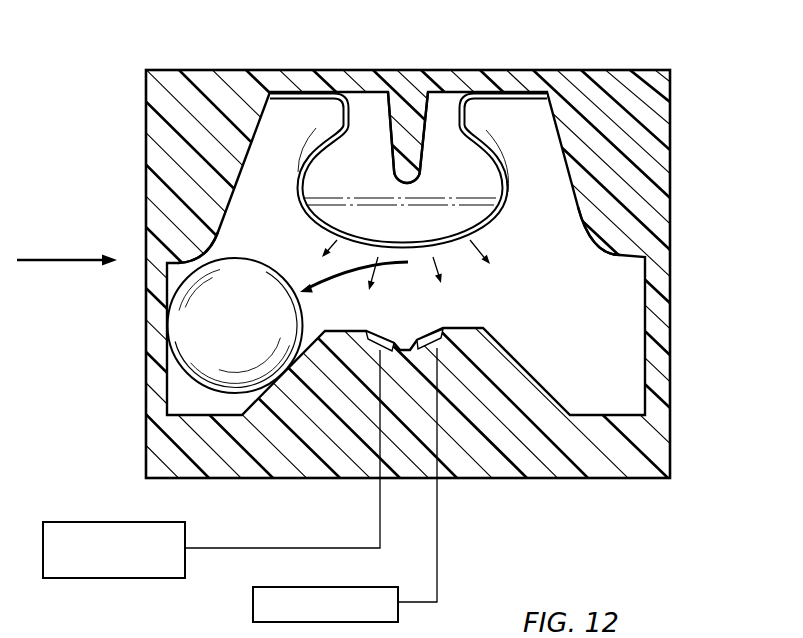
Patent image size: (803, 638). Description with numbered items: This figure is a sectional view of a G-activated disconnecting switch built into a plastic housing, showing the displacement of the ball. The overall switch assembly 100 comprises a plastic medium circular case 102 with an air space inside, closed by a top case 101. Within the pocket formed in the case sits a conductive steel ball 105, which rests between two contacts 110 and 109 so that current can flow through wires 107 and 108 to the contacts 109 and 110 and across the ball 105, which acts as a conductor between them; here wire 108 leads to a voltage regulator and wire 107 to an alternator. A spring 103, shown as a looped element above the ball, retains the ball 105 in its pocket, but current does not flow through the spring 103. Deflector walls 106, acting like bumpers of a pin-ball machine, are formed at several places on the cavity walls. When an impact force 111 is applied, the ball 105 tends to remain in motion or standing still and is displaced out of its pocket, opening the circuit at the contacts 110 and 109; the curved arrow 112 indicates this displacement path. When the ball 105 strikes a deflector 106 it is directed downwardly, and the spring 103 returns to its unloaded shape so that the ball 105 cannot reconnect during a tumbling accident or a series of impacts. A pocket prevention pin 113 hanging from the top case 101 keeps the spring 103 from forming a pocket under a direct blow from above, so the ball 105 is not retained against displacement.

The sensor assembly 100 is at (120, 68).
The top case 101 is at (476, 69).
The plastic medium circular case 102 is at (671, 316).
The spring 103 is at (500, 214).
The ball 105 is at (283, 325).
The deflector 106 is at (241, 222).
The wire 107 is at (440, 522).
The wire 108 is at (298, 548).
The contact 109 is at (430, 335).
The contact 110 is at (388, 331).
The impact force 111 is at (55, 258).
The flow path arrow 112 is at (327, 281).
The pocket prevention pin 113 is at (423, 160).